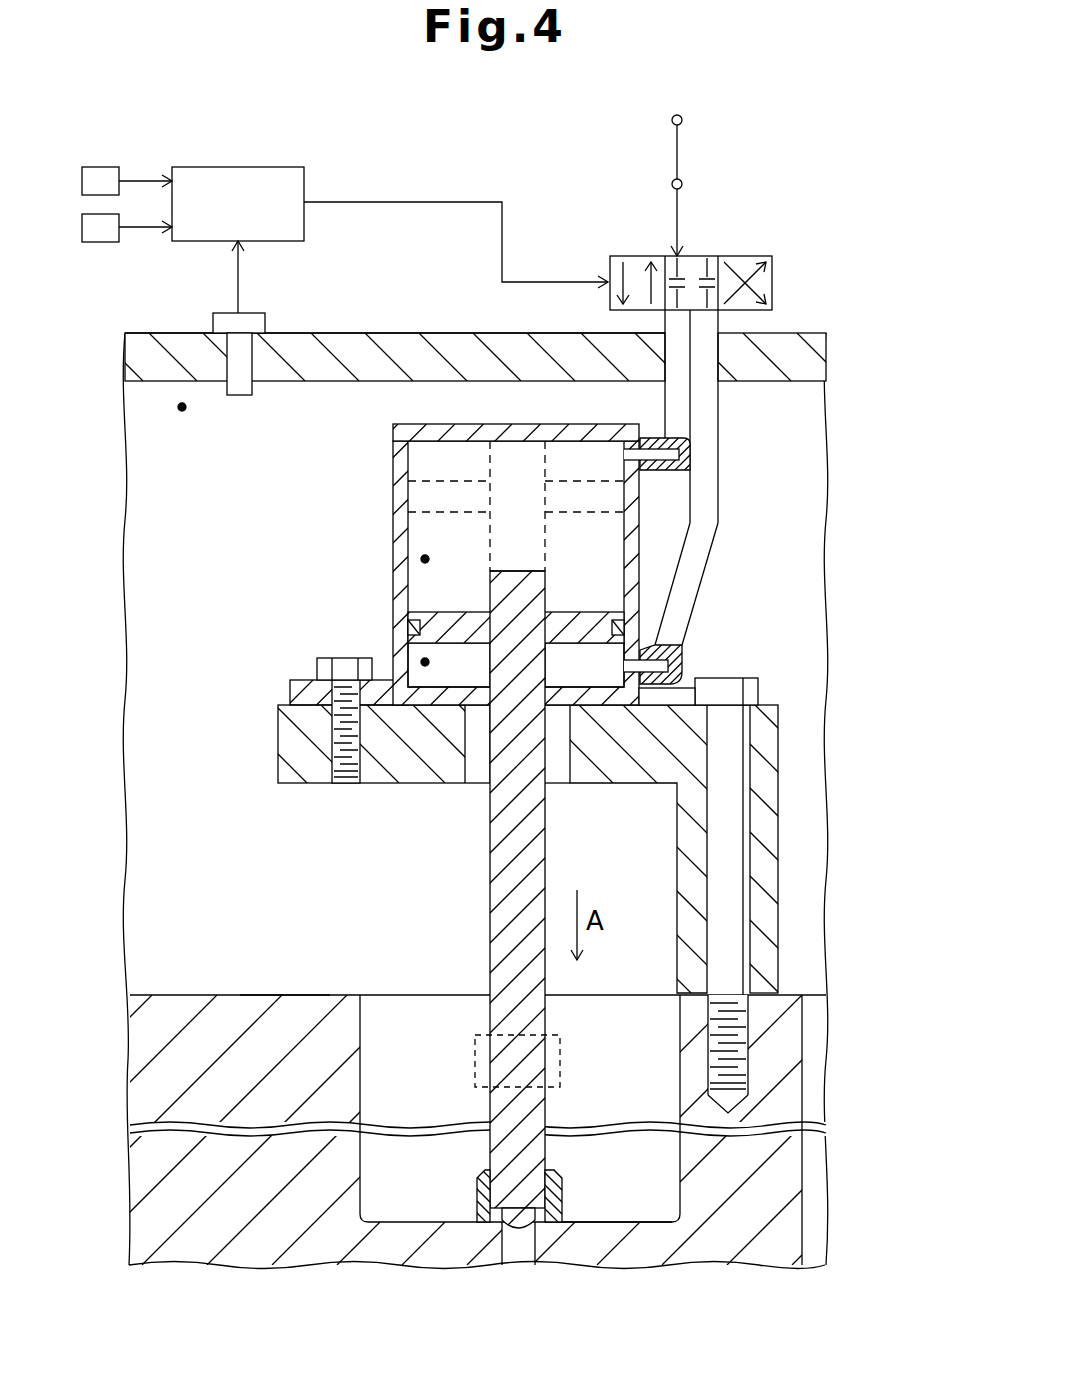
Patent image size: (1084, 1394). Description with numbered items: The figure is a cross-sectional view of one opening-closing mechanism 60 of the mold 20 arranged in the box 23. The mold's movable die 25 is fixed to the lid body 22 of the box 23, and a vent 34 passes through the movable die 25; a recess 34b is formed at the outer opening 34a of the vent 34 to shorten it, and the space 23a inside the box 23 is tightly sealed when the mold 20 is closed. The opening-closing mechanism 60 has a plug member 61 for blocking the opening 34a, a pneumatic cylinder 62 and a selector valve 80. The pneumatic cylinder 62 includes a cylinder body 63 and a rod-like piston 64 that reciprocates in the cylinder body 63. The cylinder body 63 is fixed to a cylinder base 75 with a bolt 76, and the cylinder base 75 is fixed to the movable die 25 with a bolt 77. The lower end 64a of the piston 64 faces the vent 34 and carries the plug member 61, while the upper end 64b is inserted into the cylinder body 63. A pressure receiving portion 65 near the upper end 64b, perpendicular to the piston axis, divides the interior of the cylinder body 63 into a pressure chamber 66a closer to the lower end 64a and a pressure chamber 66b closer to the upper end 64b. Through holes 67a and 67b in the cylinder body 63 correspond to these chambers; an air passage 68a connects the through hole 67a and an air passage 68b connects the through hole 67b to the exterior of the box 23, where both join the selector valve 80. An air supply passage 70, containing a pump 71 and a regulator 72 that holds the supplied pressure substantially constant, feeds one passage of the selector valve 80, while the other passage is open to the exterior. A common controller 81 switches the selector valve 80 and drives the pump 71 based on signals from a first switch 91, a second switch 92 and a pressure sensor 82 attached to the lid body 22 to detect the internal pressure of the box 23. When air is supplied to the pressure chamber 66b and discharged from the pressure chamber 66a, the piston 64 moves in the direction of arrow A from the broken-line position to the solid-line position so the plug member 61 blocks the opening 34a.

The mold 20 is at (222, 961).
The lid body 22 is at (378, 333).
The box 23 is at (443, 333).
The space 23a is at (182, 407).
The movable die 25 is at (288, 995).
The vent 34 is at (506, 1258).
The opening 34a is at (552, 1218).
The recess 34b is at (360, 1075).
The opening-closing mechanism 60 is at (291, 536).
The plug member 61 is at (562, 1185).
The pneumatic cylinder 62 is at (393, 462).
The cylinder body 63 is at (460, 424).
The piston 64 is at (542, 882).
The lower end 64a is at (478, 1205).
The upper end 64b is at (530, 571).
The pressure receiving portion 65 is at (588, 612).
The pressure chamber 66a is at (425, 662).
The pressure chamber 66b is at (425, 559).
The through hole 67a is at (632, 661).
The through hole 67b is at (632, 457).
The air passage 68a is at (682, 652).
The air passage 68b is at (666, 470).
The air supply passage 70 is at (680, 150).
The pump 71 is at (672, 120).
The regulator 72 is at (672, 184).
The cylinder base 75 is at (278, 740).
The bolt 76 is at (317, 668).
The bolt 77 is at (758, 692).
The selector valve 80 is at (774, 283).
The controller 81 is at (268, 167).
The pressure sensor 82 is at (265, 323).
The first switch 91 is at (103, 167).
The second switch 92 is at (100, 242).